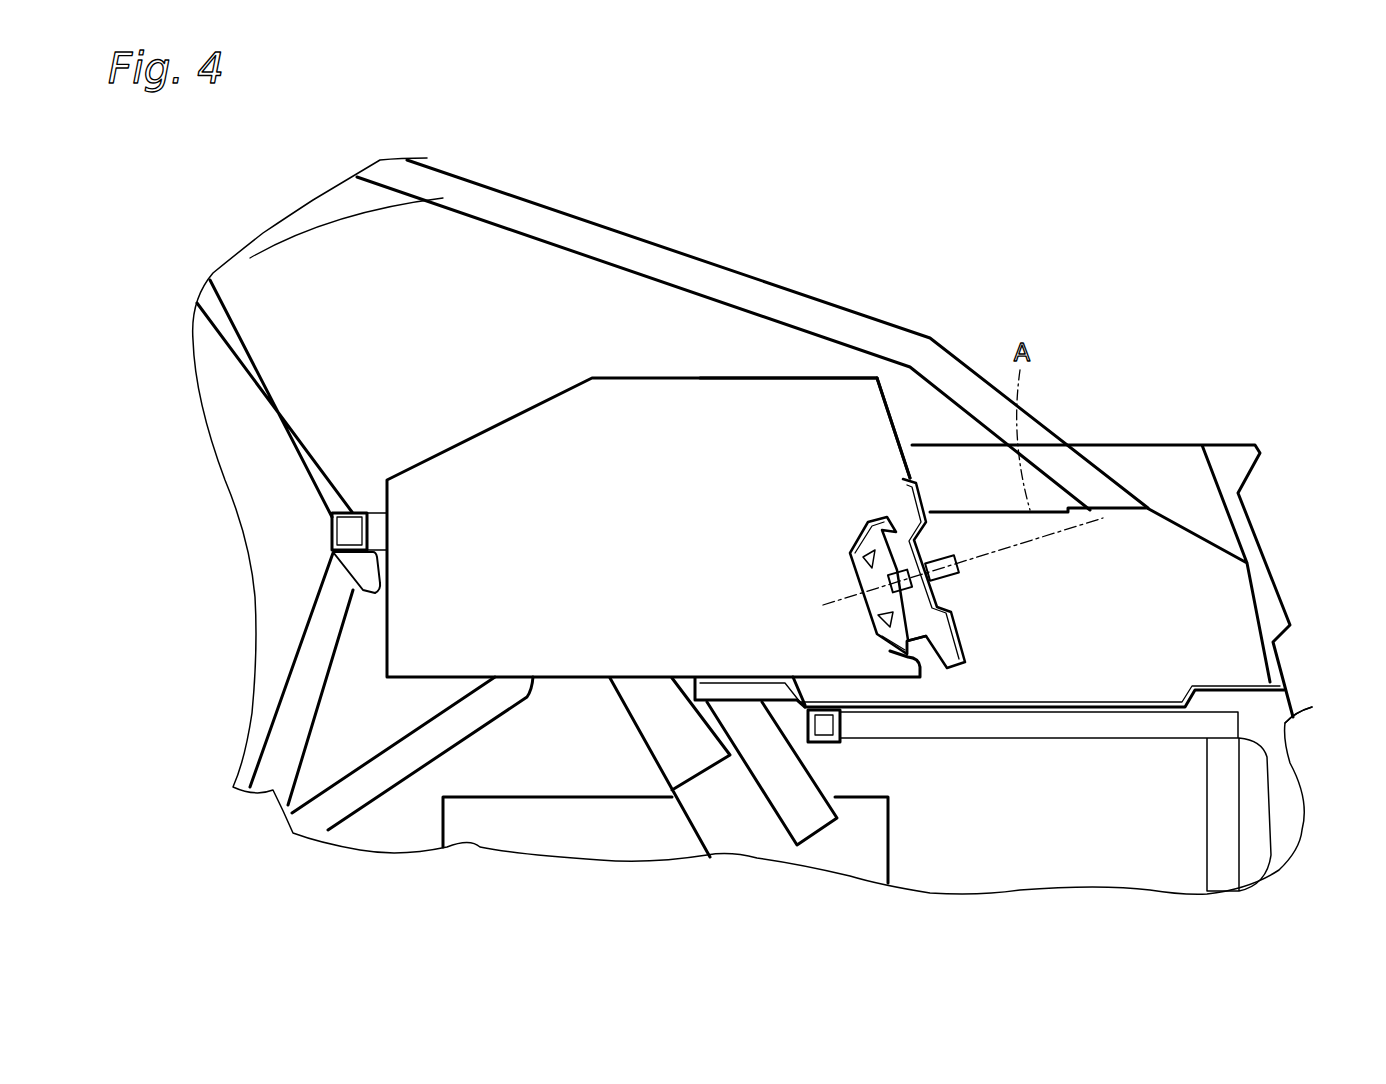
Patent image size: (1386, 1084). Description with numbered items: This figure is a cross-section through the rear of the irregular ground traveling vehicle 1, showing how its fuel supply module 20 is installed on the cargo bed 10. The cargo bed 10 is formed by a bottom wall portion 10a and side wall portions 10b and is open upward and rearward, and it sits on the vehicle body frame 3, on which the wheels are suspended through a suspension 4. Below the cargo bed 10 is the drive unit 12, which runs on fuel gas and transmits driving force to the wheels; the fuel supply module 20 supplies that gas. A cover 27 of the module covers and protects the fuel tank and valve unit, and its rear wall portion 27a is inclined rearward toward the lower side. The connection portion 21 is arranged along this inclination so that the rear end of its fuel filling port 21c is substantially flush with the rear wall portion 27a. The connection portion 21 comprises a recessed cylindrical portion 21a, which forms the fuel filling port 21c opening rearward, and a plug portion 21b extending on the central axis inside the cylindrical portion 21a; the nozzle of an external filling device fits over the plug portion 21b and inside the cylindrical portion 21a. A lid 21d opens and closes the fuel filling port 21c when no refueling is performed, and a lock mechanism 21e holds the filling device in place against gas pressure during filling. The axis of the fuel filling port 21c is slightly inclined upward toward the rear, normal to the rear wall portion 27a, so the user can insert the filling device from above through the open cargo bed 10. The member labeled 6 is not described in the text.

The irregular ground traveling vehicle 1 is at (1189, 202).
The vehicle body frame 3 is at (275, 790).
The suspension 4 is at (757, 850).
The pillar 6 is at (220, 310).
The cargo bed 10 is at (1208, 597).
The bottom wall portion 10a is at (1155, 697).
The side wall portion 10b is at (1168, 547).
The drive unit 12 is at (465, 838).
The fuel supply module 20 is at (695, 364).
The connection portion 21 is at (1032, 632).
The cylindrical portion 21a is at (855, 537).
The plug portion 21b is at (933, 622).
The fuel filling port 21c is at (905, 541).
The lid 21d is at (980, 610).
The lock mechanism 21e is at (875, 618).
The cover 27 is at (758, 390).
The rear wall portion 27a is at (897, 433).